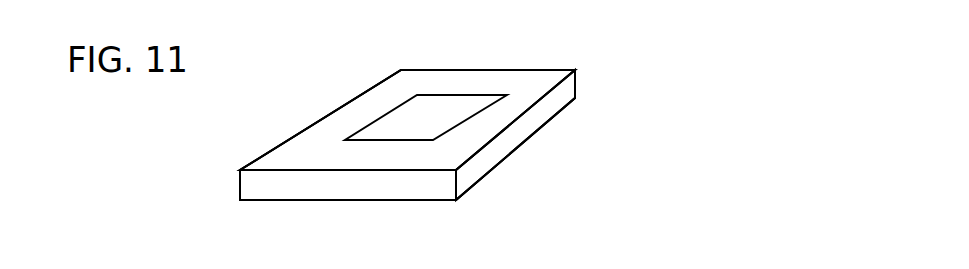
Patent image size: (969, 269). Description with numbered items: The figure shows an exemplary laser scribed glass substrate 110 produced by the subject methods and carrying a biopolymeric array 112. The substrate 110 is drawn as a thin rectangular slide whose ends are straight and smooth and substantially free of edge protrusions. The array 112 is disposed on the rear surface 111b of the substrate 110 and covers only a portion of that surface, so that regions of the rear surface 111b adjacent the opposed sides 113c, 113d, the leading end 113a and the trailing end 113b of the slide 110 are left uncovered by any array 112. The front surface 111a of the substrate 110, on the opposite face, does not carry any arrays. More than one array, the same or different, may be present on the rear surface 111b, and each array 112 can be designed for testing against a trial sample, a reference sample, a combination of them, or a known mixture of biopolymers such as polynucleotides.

The laser scribed glass substrate 110 is at (515, 130).
The front surface 111a is at (285, 202).
The rear surface 111b is at (313, 155).
The array 112 is at (408, 109).
The leading end 113a is at (472, 68).
The trailing end 113b is at (363, 190).
The opposed side 113c is at (310, 122).
The opposed side 113d is at (543, 106).